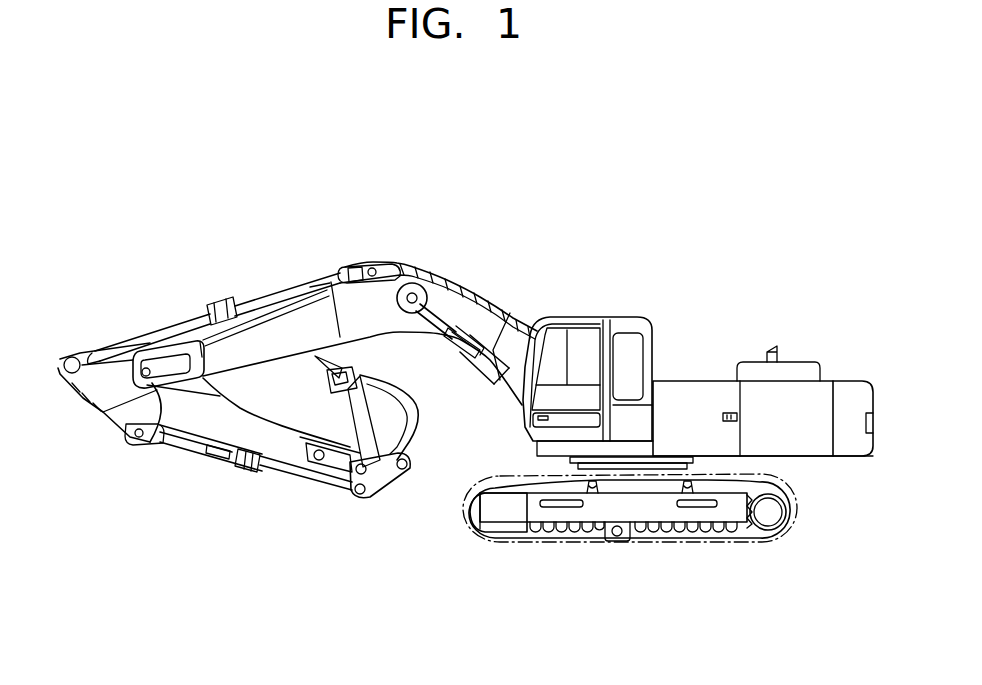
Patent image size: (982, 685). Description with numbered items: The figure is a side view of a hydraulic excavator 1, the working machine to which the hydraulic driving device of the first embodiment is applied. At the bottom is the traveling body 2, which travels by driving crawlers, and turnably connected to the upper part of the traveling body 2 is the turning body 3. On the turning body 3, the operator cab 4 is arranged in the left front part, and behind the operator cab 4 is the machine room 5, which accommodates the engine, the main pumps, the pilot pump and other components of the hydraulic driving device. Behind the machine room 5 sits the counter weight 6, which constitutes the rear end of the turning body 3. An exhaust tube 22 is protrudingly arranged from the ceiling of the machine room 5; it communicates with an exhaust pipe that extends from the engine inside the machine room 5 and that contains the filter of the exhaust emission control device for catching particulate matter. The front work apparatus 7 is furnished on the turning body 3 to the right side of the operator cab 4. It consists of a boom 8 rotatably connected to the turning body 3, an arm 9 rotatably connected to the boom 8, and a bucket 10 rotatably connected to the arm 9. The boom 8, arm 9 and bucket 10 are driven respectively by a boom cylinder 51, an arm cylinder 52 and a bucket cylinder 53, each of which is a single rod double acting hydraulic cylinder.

The hydraulic excavator 1 is at (460, 205).
The traveling body 2 is at (636, 535).
The turning body 3 is at (679, 360).
The operator cab 4 is at (618, 319).
The machine room 5 is at (698, 387).
The counter weight 6 is at (847, 393).
The front work apparatus 7 is at (326, 255).
The boom 8 is at (475, 300).
The arm 9 is at (121, 398).
The bucket 10 is at (384, 492).
The exhaust tube 22 is at (775, 348).
The boom cylinder 51 is at (487, 366).
The arm cylinder 52 is at (197, 320).
The bucket cylinder 53 is at (223, 460).